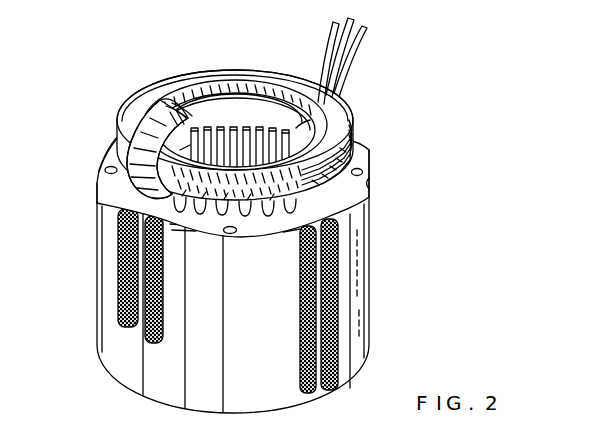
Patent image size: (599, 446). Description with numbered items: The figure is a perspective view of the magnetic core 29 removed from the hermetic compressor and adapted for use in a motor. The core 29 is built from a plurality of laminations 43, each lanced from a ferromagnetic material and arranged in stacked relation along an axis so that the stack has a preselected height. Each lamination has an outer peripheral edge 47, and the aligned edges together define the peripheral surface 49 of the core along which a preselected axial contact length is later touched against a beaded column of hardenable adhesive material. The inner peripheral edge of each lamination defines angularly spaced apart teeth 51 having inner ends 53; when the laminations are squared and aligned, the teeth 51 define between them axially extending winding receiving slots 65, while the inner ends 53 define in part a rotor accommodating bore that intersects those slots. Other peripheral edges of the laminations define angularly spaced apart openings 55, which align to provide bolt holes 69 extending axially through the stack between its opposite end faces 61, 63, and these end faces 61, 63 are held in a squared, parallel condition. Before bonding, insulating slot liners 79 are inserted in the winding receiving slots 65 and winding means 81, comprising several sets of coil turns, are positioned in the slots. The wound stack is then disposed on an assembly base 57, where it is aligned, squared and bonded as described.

The core 29 is at (231, 305).
The laminations 43 is at (236, 191).
The outer peripheral edge 47 is at (226, 147).
The peripheral surface 49 is at (357, 268).
The teeth 51 is at (226, 128).
The inner ends 53 is at (271, 131).
The openings 55 is at (105, 167).
The assembly base 57 is at (422, 366).
The end face 61 is at (113, 143).
The end face 63 is at (121, 386).
The winding receiving slots 65 is at (206, 127).
The bolt holes 69 is at (370, 181).
The insulating slot liners 79 is at (182, 121).
The winding means 81 is at (340, 103).